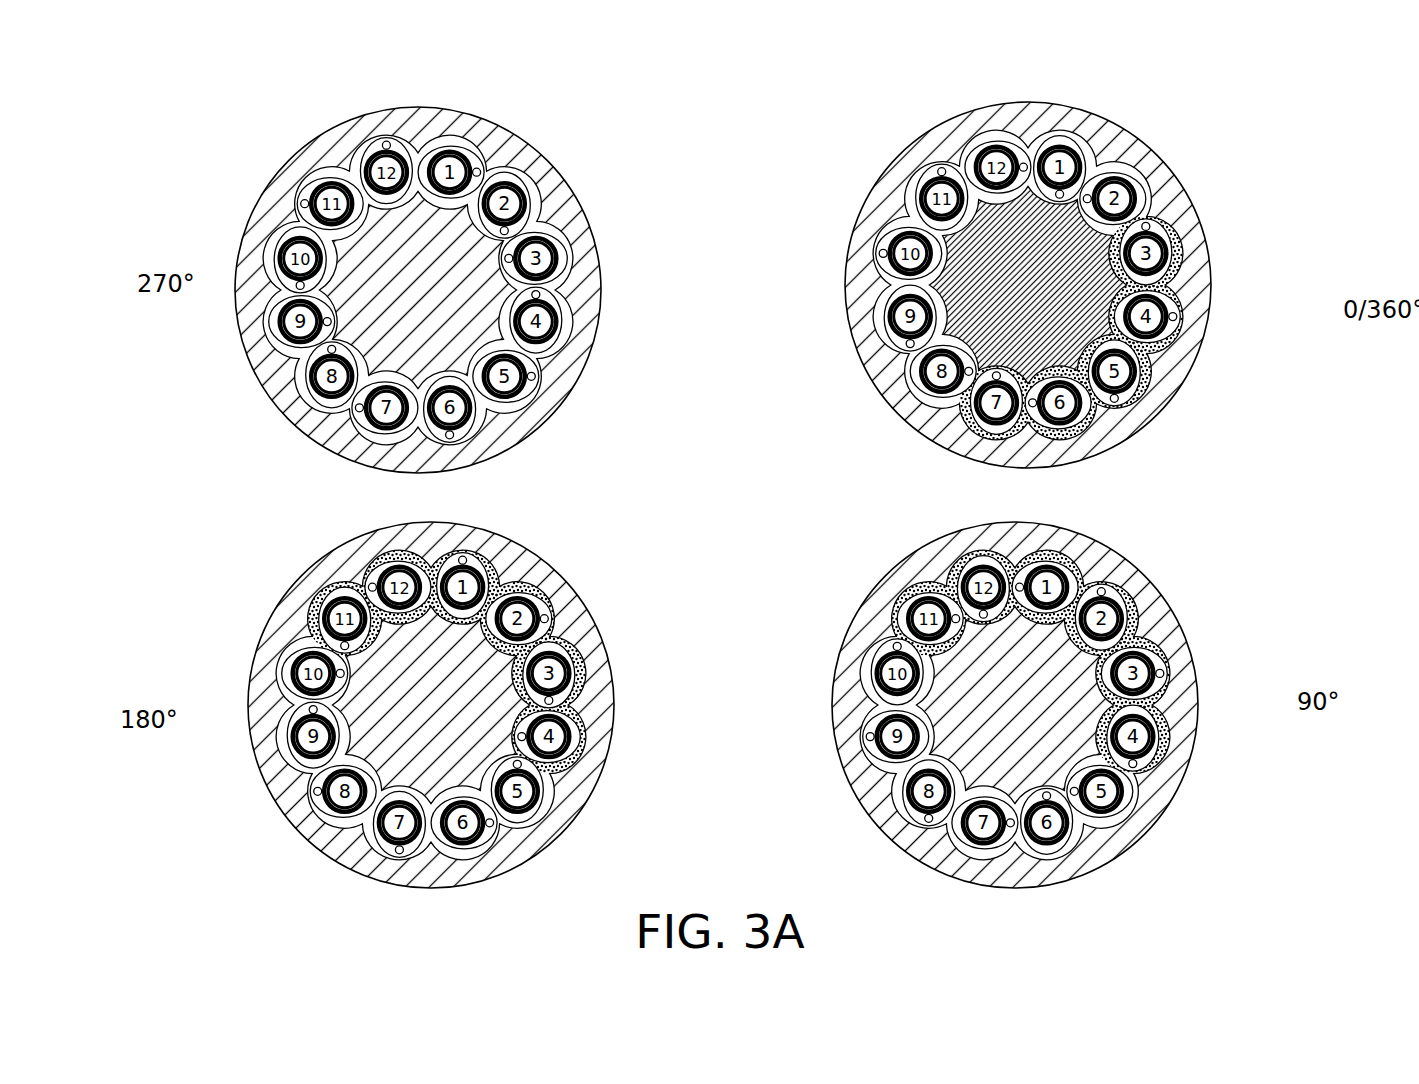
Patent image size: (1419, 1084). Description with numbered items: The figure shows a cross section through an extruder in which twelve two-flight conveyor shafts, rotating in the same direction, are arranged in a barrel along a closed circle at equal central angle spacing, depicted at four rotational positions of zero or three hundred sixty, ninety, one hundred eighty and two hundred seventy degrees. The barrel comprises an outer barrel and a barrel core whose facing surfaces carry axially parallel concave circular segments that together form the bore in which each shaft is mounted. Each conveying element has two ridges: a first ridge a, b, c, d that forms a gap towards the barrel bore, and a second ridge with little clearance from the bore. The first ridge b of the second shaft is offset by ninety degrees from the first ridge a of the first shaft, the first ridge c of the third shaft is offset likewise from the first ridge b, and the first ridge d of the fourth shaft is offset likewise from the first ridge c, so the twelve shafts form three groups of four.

The first ridge a is at (704, 472).
The first ridge b is at (723, 509).
The first ridge c is at (759, 517).
The first ridge d is at (757, 461).